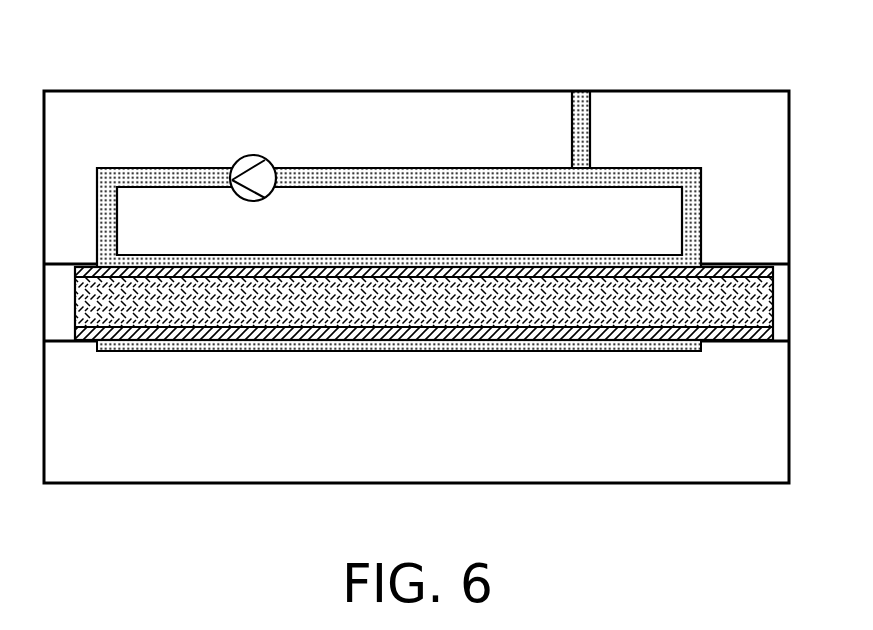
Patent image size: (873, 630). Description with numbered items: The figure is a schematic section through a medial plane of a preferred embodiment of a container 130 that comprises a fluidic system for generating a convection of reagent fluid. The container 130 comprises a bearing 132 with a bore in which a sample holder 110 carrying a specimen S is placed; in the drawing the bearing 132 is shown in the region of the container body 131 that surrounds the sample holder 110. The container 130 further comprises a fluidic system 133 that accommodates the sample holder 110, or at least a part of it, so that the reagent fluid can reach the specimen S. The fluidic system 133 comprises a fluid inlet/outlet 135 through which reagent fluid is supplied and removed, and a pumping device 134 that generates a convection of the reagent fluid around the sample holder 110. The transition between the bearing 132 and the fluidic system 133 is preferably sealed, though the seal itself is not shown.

The container 130 is at (703, 79).
The housing body 131 is at (198, 435).
The bearing 132 is at (61, 343).
The sample holder 110 is at (733, 333).
The specimen S is at (535, 311).
The fluidic system 133 is at (417, 168).
The pumping device 134 is at (237, 162).
The fluid inlet/outlet 135 is at (582, 100).